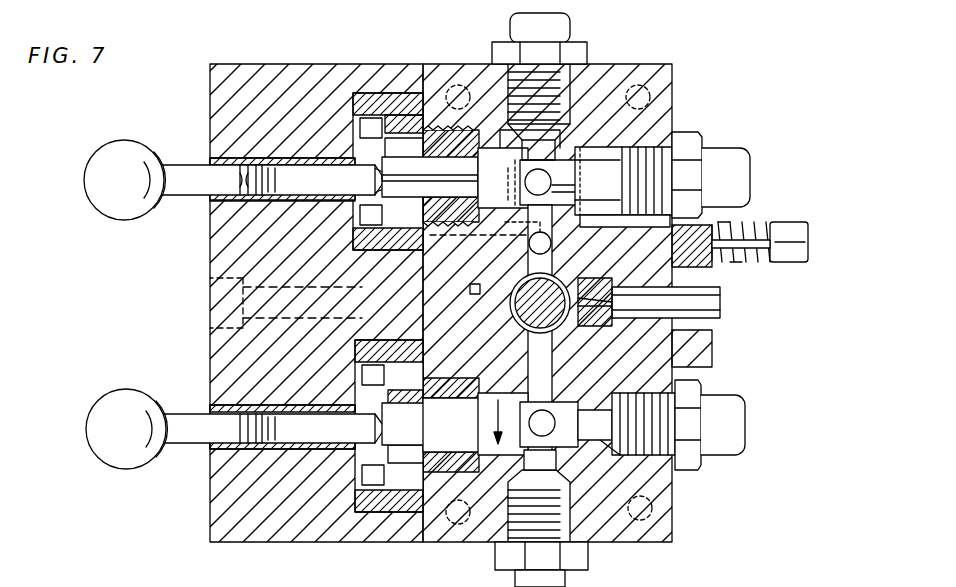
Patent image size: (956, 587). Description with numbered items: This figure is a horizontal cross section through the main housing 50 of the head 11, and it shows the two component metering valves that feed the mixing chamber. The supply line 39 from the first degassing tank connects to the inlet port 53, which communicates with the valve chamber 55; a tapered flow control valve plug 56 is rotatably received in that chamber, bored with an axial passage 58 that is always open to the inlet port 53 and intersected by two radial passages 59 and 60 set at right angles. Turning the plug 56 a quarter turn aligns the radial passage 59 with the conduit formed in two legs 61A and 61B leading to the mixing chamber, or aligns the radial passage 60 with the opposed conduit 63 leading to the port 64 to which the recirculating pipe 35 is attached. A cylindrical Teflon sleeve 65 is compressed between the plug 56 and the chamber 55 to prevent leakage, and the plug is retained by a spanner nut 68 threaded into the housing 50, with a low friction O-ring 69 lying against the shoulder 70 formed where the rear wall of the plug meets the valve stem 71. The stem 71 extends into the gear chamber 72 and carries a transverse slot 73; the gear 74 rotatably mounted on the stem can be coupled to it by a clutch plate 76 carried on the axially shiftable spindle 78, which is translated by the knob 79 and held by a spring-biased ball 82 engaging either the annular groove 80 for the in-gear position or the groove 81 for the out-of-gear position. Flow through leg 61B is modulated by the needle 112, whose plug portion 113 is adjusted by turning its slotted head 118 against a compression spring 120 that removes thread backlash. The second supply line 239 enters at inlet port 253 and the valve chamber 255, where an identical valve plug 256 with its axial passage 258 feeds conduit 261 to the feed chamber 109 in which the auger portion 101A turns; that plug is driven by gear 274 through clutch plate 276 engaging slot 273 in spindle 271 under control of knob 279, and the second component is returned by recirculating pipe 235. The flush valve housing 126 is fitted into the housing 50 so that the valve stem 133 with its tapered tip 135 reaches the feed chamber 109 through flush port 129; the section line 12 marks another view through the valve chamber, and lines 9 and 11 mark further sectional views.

The section line 9— 9 is at (555, 30).
The head 11 is at (195, 276).
The reservoir 12 is at (575, 143).
The recirculating pipe 35 is at (508, 34).
The feed line piping 39 is at (730, 150).
The housing 50 is at (666, 520).
The inlet port 53 is at (612, 150).
The valve chamber 55 is at (502, 140).
The tapered flow control valve plug 56 is at (475, 181).
The axial passage 58 is at (498, 188).
The radial passage 59 is at (560, 186).
The radial passage 60 is at (565, 150).
The leg of conduit 61 61A is at (511, 220).
The leg of conduit 61 61B is at (535, 252).
The conduit 63 is at (585, 105).
The port 64 is at (515, 100).
The cylindrical Teflon sleeve 65 is at (630, 222).
The spanner nut 68 is at (445, 142).
The low friction O-ring 69 is at (508, 192).
The shoulder 70 is at (448, 168).
The valve stem 71 is at (425, 179).
The gear chamber 72 is at (372, 92).
The transverse slot 73 is at (392, 150).
The gear 74 is at (380, 124).
The clutch plate 76 is at (372, 192).
The spindle 78 is at (302, 195).
The knob 79 is at (138, 153).
The annular groove 80 is at (244, 195).
The annular groove 81 is at (276, 168).
The ball 82 is at (258, 165).
The auger portion 101A is at (541, 340).
The feed chamber 109 is at (512, 297).
The modulating needle 112 is at (762, 224).
The plug portion 113 is at (479, 237).
The head 118 is at (790, 238).
The compression spring 120 is at (750, 262).
The valve housing 126 is at (720, 350).
The flush port 129 is at (590, 285).
The valve stem 133 is at (697, 300).
The tapered tip 135 is at (666, 302).
The recirculating pipe 235 is at (580, 578).
The supply line 239 is at (740, 408).
The inlet port 253 is at (612, 455).
The valve chamber 255 is at (508, 392).
The valve plug 256 is at (486, 392).
The axial passage 258 is at (628, 384).
The conduit 261 is at (516, 322).
The spindle 271 is at (315, 426).
The slot 273 is at (392, 448).
The gear 274 is at (356, 484).
The clutch plate 276 is at (392, 402).
The knob 279 is at (113, 402).